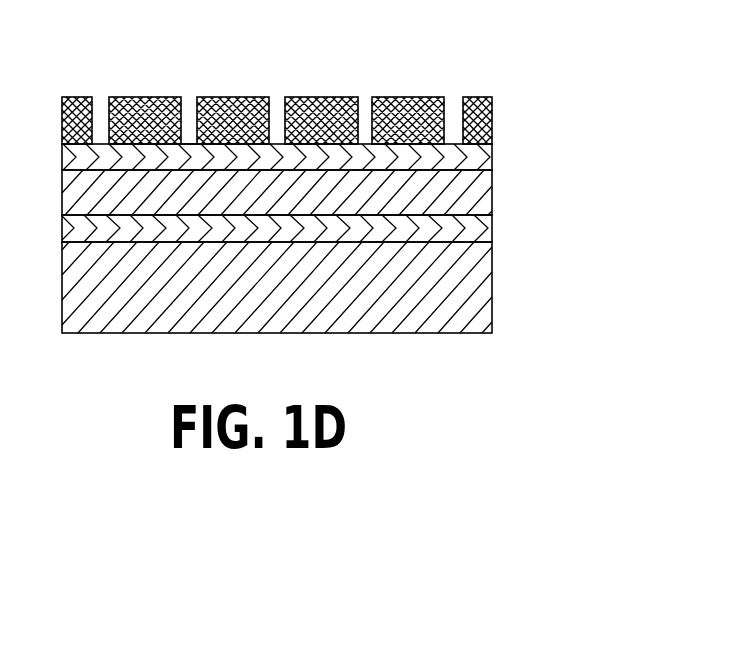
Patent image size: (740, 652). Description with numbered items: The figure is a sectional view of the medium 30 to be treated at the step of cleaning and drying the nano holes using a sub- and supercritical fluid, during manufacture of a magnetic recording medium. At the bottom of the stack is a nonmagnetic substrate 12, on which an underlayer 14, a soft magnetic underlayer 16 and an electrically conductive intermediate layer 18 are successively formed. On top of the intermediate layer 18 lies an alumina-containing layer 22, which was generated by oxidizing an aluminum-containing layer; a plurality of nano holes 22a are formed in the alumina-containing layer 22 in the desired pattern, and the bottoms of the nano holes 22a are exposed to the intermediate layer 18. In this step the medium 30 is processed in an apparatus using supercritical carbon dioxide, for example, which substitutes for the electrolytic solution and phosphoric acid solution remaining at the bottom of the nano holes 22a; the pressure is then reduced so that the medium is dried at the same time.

The nonmagnetic substrate 12 is at (493, 295).
The underlayer 14 is at (493, 230).
The soft magnetic underlayer 16 is at (493, 195).
The intermediate layer 18 is at (493, 152).
The alumina-containing layer 22 is at (492, 108).
The nano holes 22a is at (190, 102).
The medium to be treated 30 is at (465, 75).